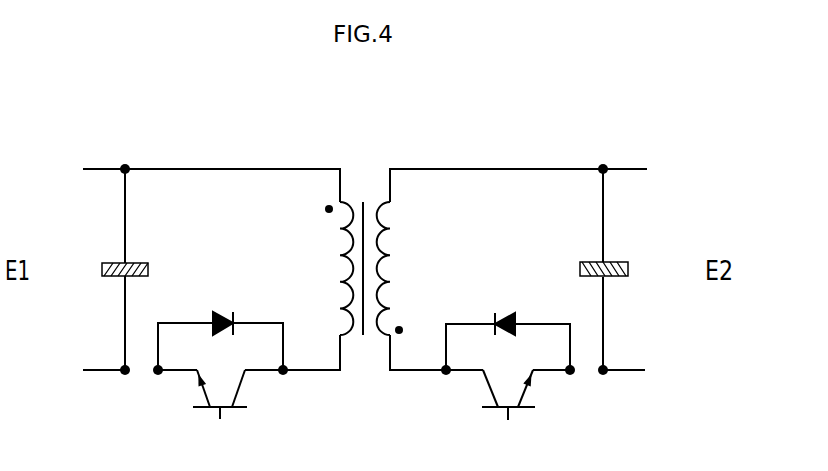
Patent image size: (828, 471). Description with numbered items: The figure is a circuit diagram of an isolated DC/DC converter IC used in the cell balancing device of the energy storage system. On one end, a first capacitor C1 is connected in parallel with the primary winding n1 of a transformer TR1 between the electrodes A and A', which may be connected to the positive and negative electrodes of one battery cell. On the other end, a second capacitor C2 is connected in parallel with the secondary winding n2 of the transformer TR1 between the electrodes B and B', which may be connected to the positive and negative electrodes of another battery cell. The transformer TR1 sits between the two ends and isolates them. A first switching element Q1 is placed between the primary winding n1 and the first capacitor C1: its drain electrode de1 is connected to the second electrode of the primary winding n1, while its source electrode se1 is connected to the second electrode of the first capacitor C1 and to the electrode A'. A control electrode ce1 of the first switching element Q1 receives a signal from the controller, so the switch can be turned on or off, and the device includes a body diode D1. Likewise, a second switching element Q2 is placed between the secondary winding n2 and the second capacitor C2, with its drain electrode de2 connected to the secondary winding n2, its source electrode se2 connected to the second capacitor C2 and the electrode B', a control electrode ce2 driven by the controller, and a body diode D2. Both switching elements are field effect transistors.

The electrode A is at (91, 170).
The second electrode A' is at (87, 371).
The electrode B is at (639, 170).
The second electrode B' is at (640, 371).
The first capacitor C1 is at (132, 269).
The second capacitor C2 is at (599, 269).
The body diode D1 is at (220, 322).
The body diode D2 is at (508, 323).
The transformer TR1 is at (366, 235).
The primary winding n1 is at (331, 268).
The secondary winding n2 is at (400, 268).
The first switching element Q1 is at (221, 412).
The second switching element Q2 is at (510, 413).
The source electrode se1 is at (196, 395).
The drain electrode de1 is at (246, 395).
The control electrode ce1 is at (219, 431).
The source electrode se2 is at (534, 395).
The drain electrode de2 is at (486, 395).
The control electrode ce2 is at (508, 431).
The isolated DC/DC converter IC is at (657, 138).